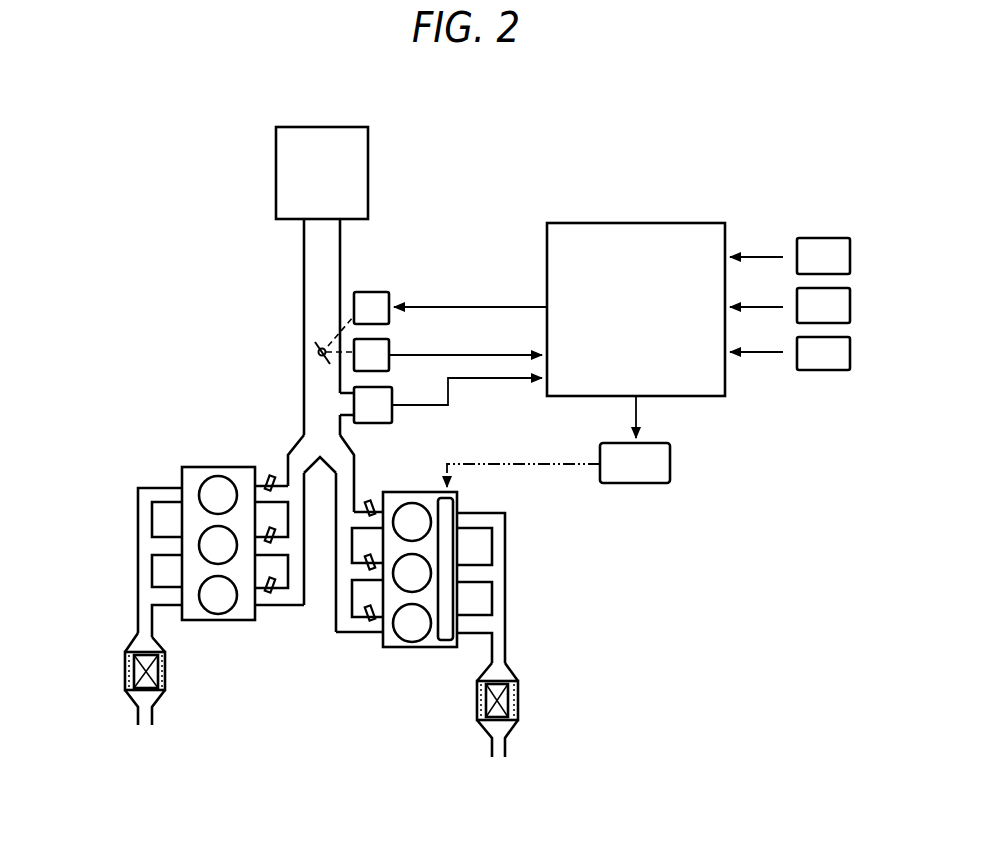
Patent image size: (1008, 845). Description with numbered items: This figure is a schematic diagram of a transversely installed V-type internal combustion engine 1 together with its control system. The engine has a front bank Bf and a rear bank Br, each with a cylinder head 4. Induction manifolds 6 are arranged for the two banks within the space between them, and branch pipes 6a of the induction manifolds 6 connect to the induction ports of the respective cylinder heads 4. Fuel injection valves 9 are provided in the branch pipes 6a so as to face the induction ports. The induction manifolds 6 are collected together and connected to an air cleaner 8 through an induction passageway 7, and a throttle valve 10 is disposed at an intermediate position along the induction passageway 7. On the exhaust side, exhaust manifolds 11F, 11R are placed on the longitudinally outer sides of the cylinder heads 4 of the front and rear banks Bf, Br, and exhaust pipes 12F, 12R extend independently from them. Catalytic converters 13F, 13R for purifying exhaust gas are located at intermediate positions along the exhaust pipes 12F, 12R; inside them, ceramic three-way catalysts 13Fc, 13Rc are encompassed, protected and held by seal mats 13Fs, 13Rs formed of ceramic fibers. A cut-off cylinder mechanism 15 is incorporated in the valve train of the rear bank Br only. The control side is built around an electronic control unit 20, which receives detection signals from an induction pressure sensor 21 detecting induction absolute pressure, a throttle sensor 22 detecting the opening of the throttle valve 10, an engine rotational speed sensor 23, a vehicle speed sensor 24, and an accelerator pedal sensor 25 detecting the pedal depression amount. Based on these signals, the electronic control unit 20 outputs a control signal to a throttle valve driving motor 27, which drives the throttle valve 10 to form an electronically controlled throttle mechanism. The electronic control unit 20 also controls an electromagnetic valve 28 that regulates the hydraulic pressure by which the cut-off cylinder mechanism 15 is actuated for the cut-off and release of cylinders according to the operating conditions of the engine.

The internal combustion engine 1 is at (310, 676).
The cylinder head 4 is at (319, 574).
The induction manifold 6 is at (333, 572).
The branch pipe 6a is at (283, 605).
The induction passageway 7 is at (304, 290).
The air cleaner 8 is at (276, 165).
The fuel injection valve 9 is at (270, 476).
The throttle valve 10 is at (318, 352).
The exhaust manifold 11F is at (138, 541).
The exhaust manifold 11R is at (505, 565).
The exhaust pipe 12F is at (138, 622).
The exhaust pipe 12R is at (507, 652).
The catalytic converter 13F is at (146, 710).
The seal mat 13Fs is at (165, 680).
The three-way catalyst 13Fc is at (142, 690).
The catalytic converter 13R is at (512, 741).
The seal mat 13Rs is at (477, 713).
The three-way catalyst 13Rc is at (495, 717).
The cut-off cylinder mechanism 15 is at (448, 633).
The electronic control unit 20 is at (640, 223).
The induction pressure sensor 21 is at (392, 420).
The throttle sensor 22 is at (389, 343).
The engine rotational speed sensor 23 is at (850, 305).
The vehicle speed sensor 24 is at (850, 352).
The accelerator pedal sensor 25 is at (826, 238).
The throttle valve driving motor 27 is at (373, 292).
The electromagnetic valve 28 is at (670, 462).
The front bank Bf is at (213, 626).
The rear bank Br is at (406, 654).